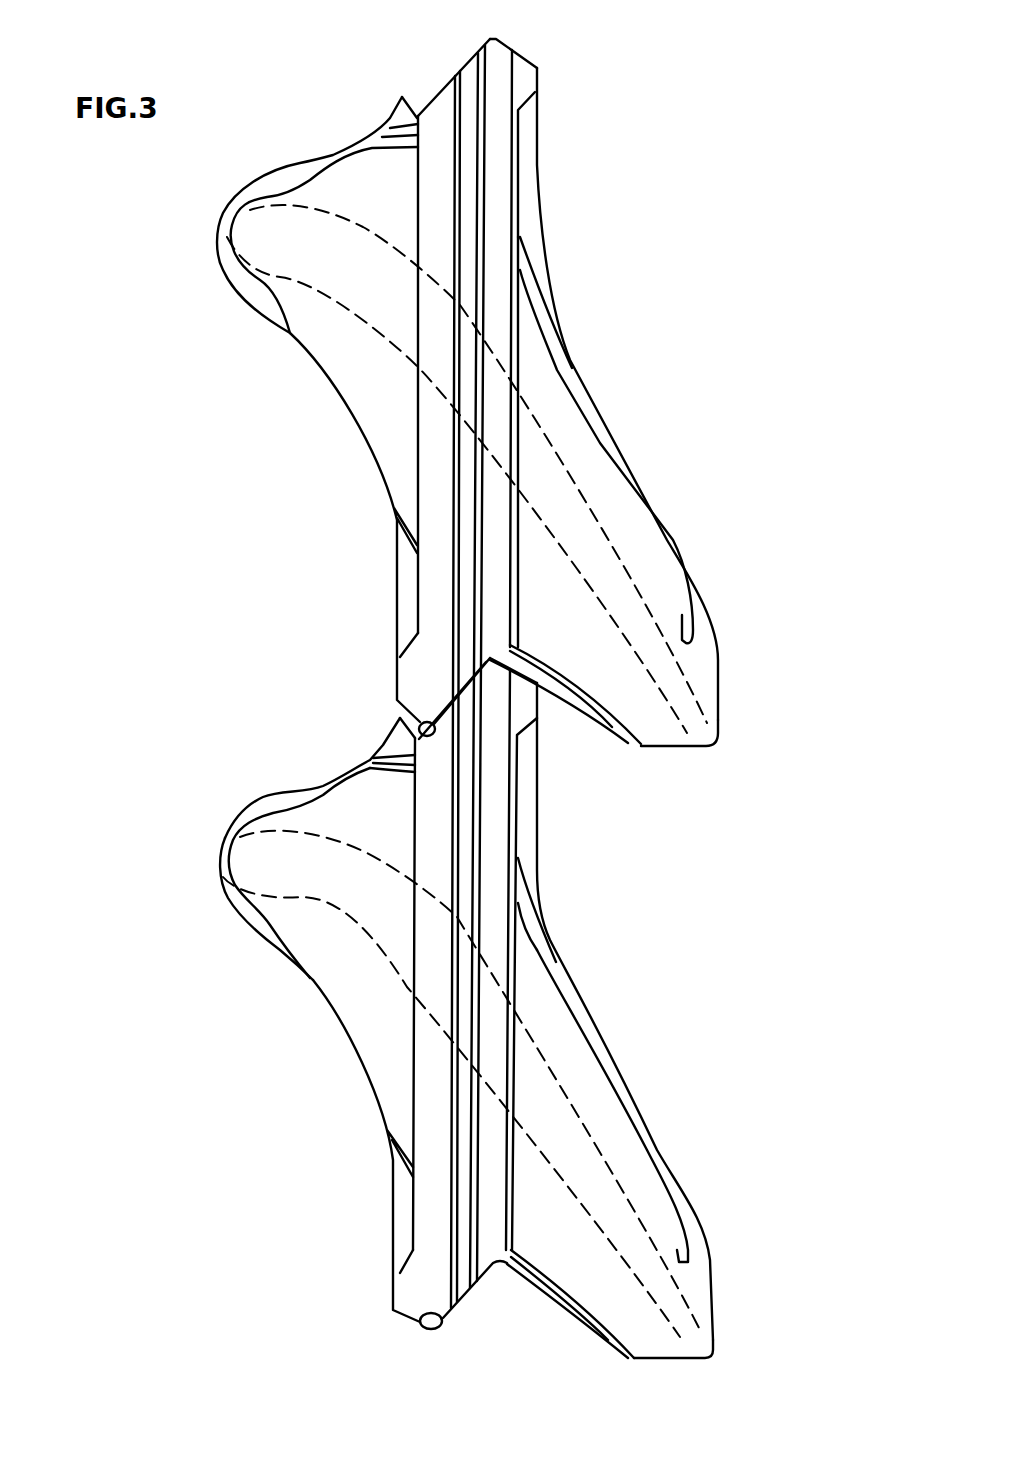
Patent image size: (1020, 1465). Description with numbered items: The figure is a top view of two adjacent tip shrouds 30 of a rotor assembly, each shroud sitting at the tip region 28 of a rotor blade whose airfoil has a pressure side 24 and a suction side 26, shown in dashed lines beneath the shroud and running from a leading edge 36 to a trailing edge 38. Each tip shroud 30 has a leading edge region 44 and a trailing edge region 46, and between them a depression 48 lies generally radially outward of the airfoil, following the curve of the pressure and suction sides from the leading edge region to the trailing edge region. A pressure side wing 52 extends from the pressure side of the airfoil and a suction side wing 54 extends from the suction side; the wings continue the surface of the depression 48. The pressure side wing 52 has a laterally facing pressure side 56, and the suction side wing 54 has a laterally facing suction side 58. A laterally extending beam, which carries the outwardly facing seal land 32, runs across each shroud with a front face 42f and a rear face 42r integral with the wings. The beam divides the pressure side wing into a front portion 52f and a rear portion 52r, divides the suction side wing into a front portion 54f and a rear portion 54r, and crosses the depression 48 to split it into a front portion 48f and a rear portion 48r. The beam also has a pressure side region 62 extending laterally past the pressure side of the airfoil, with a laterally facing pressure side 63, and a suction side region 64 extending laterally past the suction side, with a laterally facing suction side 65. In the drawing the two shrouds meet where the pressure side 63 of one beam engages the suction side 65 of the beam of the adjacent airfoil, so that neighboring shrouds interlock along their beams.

The pressure side 24 is at (400, 350).
The suction side 26 is at (520, 327).
The tip region 28 is at (612, 355).
The tip shroud 30 is at (700, 557).
The seal land 32 is at (496, 78).
The leading edge 36 is at (227, 203).
The trailing edge 38 is at (722, 739).
The front face 42f is at (390, 119).
The rear face 42r is at (519, 155).
The leading edge region 44 is at (220, 884).
The trailing edge region 46 is at (714, 1357).
The depression 48 is at (358, 267).
The front portion of the depression 48f is at (317, 878).
The rear portion of the depression 48r is at (644, 1117).
The pressure side wing 52 is at (330, 1019).
The front portion of the pressure side wing 52f is at (323, 947).
The rear portion of the pressure side wing 52r is at (600, 1293).
The suction side wing 54 is at (323, 778).
The front portion of the suction side wing 54f is at (383, 787).
The rear portion of the suction side wing 54r is at (684, 615).
The laterally facing pressure side 56 is at (373, 1083).
The laterally facing suction side 58 is at (280, 788).
The pressure side region 62 is at (455, 676).
The laterally facing pressure side of the beam 63 is at (497, 650).
The suction side region 64 is at (434, 683).
The laterally facing suction side of the beam 65 is at (445, 92).